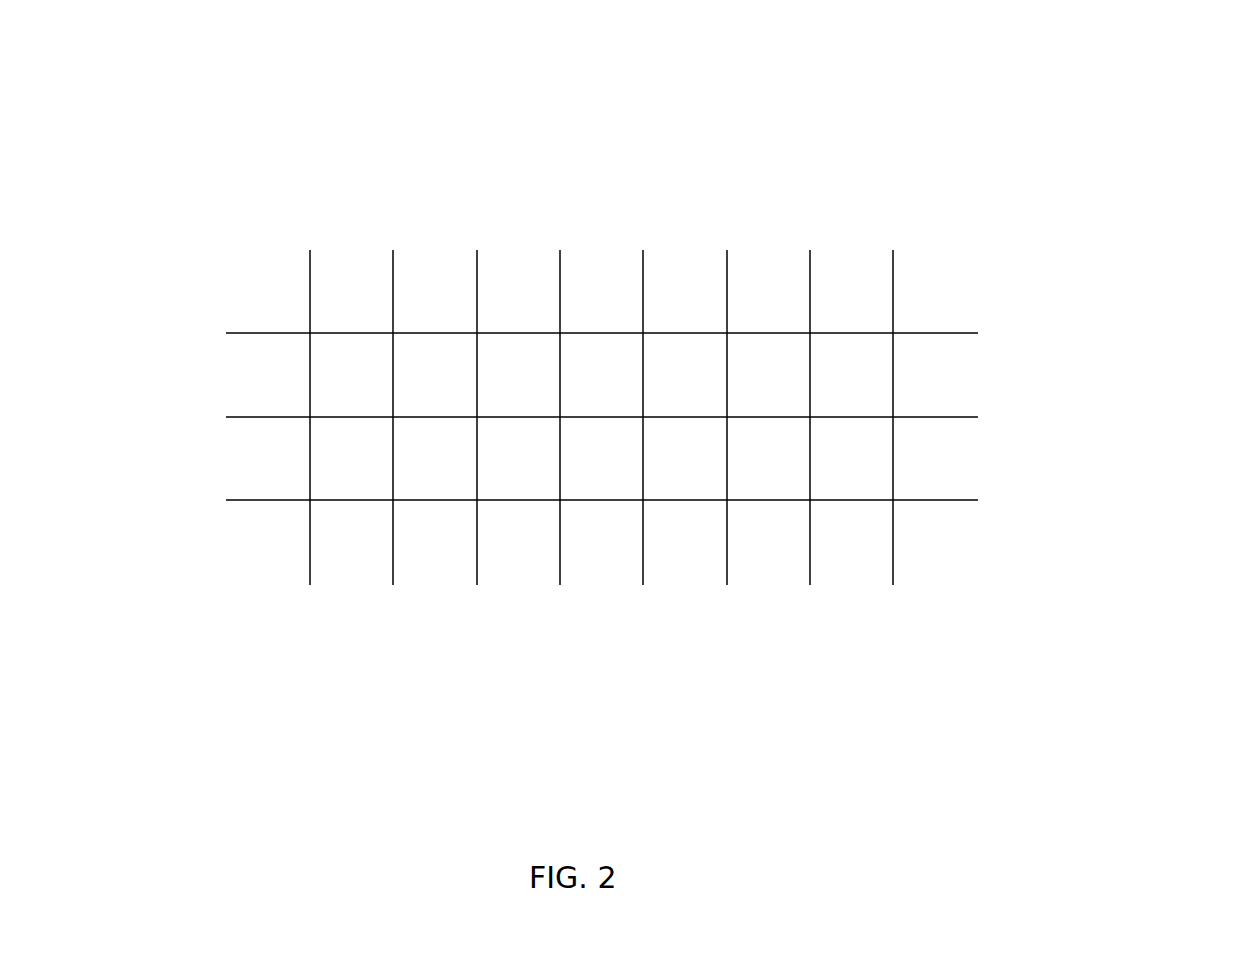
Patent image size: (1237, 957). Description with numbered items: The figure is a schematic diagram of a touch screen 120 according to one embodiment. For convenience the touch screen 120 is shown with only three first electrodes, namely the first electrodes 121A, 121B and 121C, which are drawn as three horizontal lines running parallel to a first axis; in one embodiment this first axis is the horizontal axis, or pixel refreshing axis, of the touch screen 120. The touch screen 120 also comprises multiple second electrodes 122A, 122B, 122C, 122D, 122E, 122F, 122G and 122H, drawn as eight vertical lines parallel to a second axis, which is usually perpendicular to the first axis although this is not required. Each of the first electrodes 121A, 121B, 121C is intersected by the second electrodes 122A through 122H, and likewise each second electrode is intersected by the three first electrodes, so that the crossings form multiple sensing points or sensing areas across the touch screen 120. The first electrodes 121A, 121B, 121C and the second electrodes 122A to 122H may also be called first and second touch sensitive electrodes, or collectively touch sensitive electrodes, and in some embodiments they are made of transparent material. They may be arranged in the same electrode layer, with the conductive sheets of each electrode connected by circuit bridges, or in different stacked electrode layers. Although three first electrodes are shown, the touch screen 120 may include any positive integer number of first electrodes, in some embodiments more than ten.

The touch screen 120 is at (1217, 52).
The first electrode 121A is at (255, 333).
The first electrode 121B is at (255, 417).
The first electrode 121C is at (255, 500).
The second electrode 122A is at (310, 307).
The second electrode 122B is at (393, 307).
The second electrode 122C is at (477, 307).
The second electrode 122D is at (560, 307).
The second electrode 122E is at (643, 307).
The second electrode 122F is at (727, 307).
The second electrode 122G is at (810, 307).
The second electrode 122H is at (893, 307).